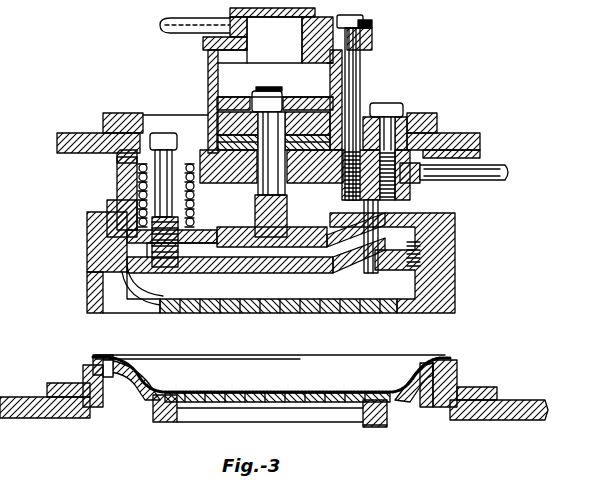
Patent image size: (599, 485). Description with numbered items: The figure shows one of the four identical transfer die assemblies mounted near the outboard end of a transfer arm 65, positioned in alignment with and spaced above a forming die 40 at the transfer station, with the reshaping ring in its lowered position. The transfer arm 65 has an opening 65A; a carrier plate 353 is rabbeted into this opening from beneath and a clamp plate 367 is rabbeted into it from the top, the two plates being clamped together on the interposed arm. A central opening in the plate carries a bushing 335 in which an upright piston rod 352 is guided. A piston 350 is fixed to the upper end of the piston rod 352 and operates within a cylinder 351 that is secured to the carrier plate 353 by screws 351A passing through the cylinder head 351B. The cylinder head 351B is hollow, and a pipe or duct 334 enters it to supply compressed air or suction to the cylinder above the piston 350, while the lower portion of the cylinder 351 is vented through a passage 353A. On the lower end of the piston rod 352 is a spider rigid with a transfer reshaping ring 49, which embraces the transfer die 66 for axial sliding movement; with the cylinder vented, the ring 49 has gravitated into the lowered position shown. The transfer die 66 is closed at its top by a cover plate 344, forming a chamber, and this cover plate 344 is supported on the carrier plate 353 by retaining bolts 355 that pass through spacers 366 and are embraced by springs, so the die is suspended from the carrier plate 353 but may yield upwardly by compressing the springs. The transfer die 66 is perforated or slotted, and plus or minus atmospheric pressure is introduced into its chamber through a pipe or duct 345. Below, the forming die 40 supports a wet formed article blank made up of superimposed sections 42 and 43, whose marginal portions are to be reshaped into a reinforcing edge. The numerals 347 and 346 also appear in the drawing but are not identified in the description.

The pipe or duct 334 is at (163, 30).
The clamp plate 367 is at (108, 113).
The spacers 366 is at (130, 153).
The transfer arm 65 is at (58, 142).
The opening 65A is at (482, 153).
The retaining bolts 355 is at (165, 133).
The passage 353A is at (328, 96).
The cylinder 351 is at (337, 76).
The screws 351A is at (372, 24).
The cylinder head 351B is at (374, 44).
The piston 350 is at (336, 113).
The pipe or duct 345 is at (512, 173).
The spring 347 is at (138, 178).
The cup 346 is at (108, 202).
The piston rod 352 is at (290, 186).
The bushing 335 is at (252, 186).
The carrier plate 353 is at (412, 187).
The transfer reshaping ring 49 is at (458, 242).
The cover plate 344 is at (262, 274).
The transfer die 66 is at (365, 315).
The section of article blank 42 is at (447, 356).
The section of article blank 43 is at (450, 361).
The forming die 40 is at (498, 390).